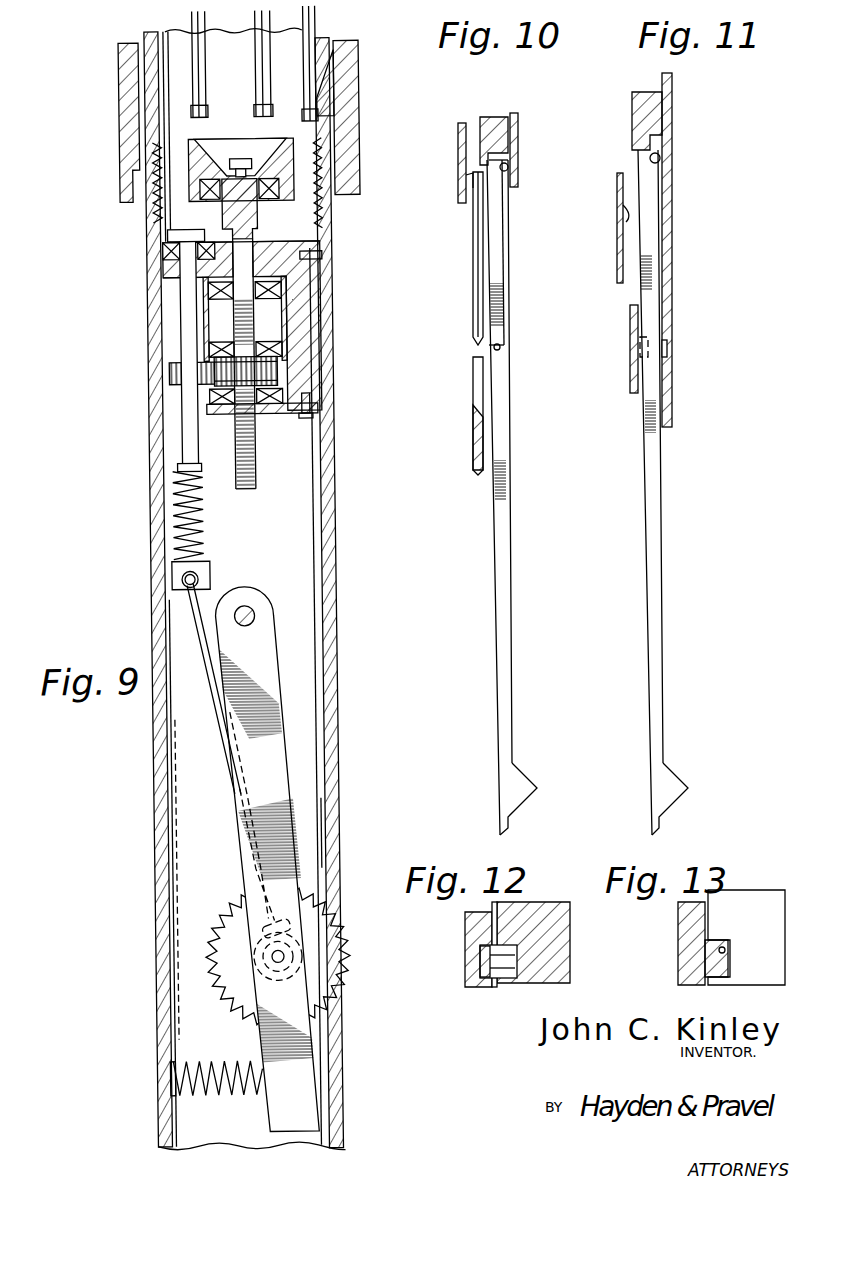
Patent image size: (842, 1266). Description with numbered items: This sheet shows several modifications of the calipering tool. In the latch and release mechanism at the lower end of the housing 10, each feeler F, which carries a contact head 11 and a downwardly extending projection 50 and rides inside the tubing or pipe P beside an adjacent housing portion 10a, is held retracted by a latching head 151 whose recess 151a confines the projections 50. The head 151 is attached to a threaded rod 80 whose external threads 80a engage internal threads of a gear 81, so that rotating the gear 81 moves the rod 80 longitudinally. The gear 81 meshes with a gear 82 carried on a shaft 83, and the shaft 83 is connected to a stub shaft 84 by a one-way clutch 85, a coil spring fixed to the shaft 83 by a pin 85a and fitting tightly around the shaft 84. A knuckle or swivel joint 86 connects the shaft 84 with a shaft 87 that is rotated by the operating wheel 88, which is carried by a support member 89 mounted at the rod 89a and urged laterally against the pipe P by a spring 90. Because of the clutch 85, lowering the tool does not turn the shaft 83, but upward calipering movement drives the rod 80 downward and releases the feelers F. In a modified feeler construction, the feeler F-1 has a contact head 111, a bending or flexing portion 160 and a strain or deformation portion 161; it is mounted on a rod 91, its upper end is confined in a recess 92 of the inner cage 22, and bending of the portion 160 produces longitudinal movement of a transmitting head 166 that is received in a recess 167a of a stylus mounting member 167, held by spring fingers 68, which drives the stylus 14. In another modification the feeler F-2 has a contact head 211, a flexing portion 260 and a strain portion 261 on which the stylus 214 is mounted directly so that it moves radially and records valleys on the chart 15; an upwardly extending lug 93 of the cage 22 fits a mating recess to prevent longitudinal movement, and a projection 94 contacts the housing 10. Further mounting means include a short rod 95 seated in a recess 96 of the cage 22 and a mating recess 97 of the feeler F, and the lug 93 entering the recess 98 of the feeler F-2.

In FIG. 9, the housing 10 is at (150, 82).
In FIG. 10, the housing 10 is at (518, 125).
In FIG. 11, the housing 10 is at (672, 282).
In FIG. 9, the tubing or pipe P is at (120, 118).
In FIG. 9, the contact head 11 is at (348, 76).
In FIG. 9, the housing shoulder 10a is at (330, 97).
In FIG. 9, the feeler F is at (315, 22).
In FIG. 12, the feeler F is at (560, 945).
In FIG. 9, the downwardly extending projection 50 is at (255, 108).
In FIG. 9, the latching head 151 is at (190, 157).
In FIG. 9, the recess 151a is at (234, 160).
In FIG. 9, the threaded rod 80 is at (255, 220).
In FIG. 9, the external threads 80a is at (252, 446).
In FIG. 9, the gear 81 is at (275, 375).
In FIG. 9, the gear 82 is at (165, 373).
In FIG. 9, the shaft 83 is at (178, 418).
In FIG. 9, the pin 85a is at (180, 462).
In FIG. 9, the one-way clutch 85 is at (170, 508).
In FIG. 9, the stub shaft 84 is at (172, 566).
In FIG. 9, the knuckle or swivel joint 86 is at (175, 580).
In FIG. 9, the rod 89a is at (243, 608).
In FIG. 9, the support member 89 is at (266, 700).
In FIG. 9, the shaft 87 is at (222, 728).
In FIG. 9, the operating wheel 88 is at (335, 975).
In FIG. 9, the spring 90 is at (215, 1064).
In FIG. 10, the inner cage 22 is at (492, 118).
In FIG. 11, the inner cage 22 is at (668, 110).
In FIG. 12, the inner cage 22 is at (475, 960).
In FIG. 13, the inner cage 22 is at (690, 925).
In FIG. 10, the chart 15 is at (458, 142).
In FIG. 11, the chart 15 is at (617, 192).
In FIG. 10, the recess 92 is at (508, 170).
In FIG. 11, the recess 92 is at (660, 160).
In FIG. 10, the stylus 14 is at (465, 188).
In FIG. 10, the stylus mounting member 167 is at (473, 240).
In FIG. 10, the strain or deformation portion 161 is at (500, 220).
In FIG. 10, the transmitting head 166 is at (478, 340).
In FIG. 10, the opening or recess 167a is at (480, 347).
In FIG. 10, the rod 91 is at (501, 347).
In FIG. 10, the spring fingers 68 is at (473, 375).
In FIG. 10, the feeler F-1 is at (510, 505).
In FIG. 10, the bending or flexing portion 160 is at (505, 600).
In FIG. 10, the contact head 111 is at (530, 775).
In FIG. 11, the strain or deformation portion 261 is at (653, 245).
In FIG. 11, the stylus 214 is at (628, 228).
In FIG. 11, the projection 94 is at (650, 348).
In FIG. 11, the lug 93 is at (630, 345).
In FIG. 13, the lug 93 is at (710, 960).
In FIG. 11, the feeler F-2 is at (665, 528).
In FIG. 13, the feeler F-2 is at (790, 905).
In FIG. 11, the bending or flexing portion 260 is at (660, 633).
In FIG. 11, the contact head 211 is at (690, 775).
In FIG. 12, the mating recess 97 is at (505, 945).
In FIG. 12, the short rod 95 is at (482, 955).
In FIG. 12, the recess 96 is at (478, 972).
In FIG. 13, the recess 98 is at (730, 960).